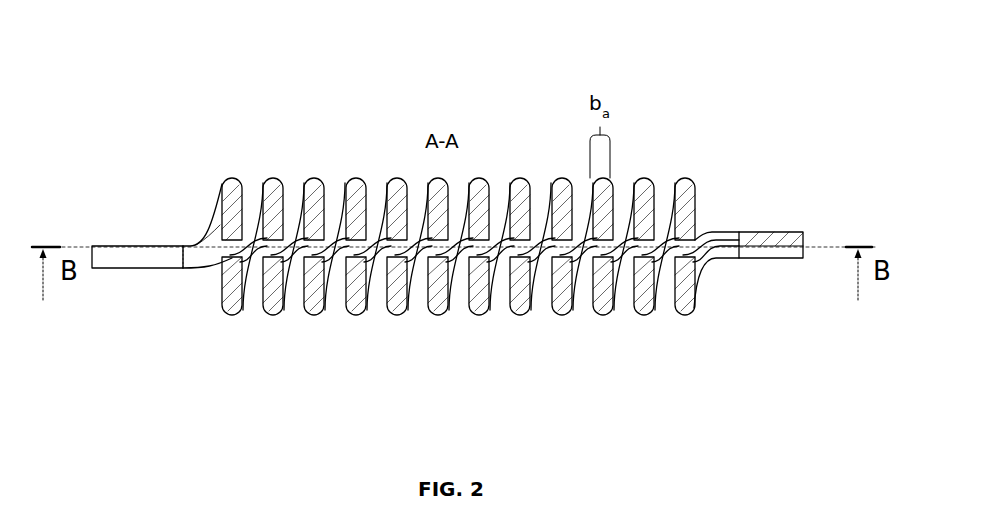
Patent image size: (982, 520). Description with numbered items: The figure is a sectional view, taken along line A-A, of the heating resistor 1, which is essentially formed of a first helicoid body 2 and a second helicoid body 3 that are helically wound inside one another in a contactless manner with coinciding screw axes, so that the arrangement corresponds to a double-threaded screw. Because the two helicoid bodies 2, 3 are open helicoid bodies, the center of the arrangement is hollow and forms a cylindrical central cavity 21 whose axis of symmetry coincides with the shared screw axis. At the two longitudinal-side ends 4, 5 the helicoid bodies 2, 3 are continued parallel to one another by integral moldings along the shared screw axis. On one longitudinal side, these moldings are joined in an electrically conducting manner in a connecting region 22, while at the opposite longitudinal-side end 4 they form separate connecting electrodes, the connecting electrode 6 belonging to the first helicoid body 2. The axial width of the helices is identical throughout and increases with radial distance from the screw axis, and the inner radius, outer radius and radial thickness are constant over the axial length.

The heating resistor 1 is at (521, 150).
The first helicoid body 2 is at (357, 177).
The second helicoid body 3 is at (316, 300).
The longitudinal-side end 4 is at (141, 285).
The longitudinal-side end 5 is at (771, 214).
The connecting electrode 6 is at (140, 257).
The central cavity 21 is at (240, 245).
The connecting region 22 is at (773, 250).